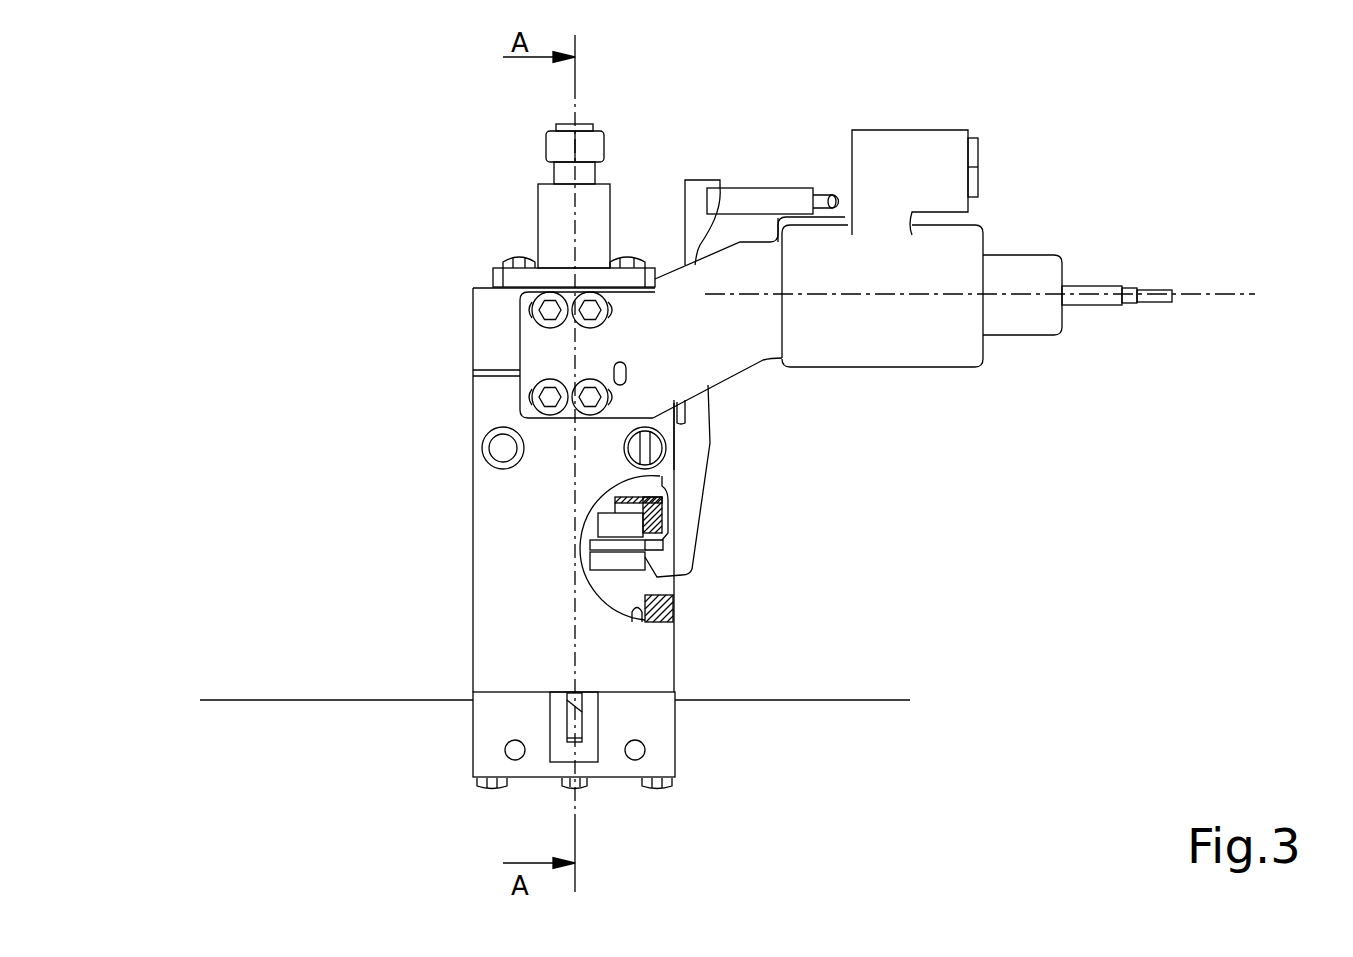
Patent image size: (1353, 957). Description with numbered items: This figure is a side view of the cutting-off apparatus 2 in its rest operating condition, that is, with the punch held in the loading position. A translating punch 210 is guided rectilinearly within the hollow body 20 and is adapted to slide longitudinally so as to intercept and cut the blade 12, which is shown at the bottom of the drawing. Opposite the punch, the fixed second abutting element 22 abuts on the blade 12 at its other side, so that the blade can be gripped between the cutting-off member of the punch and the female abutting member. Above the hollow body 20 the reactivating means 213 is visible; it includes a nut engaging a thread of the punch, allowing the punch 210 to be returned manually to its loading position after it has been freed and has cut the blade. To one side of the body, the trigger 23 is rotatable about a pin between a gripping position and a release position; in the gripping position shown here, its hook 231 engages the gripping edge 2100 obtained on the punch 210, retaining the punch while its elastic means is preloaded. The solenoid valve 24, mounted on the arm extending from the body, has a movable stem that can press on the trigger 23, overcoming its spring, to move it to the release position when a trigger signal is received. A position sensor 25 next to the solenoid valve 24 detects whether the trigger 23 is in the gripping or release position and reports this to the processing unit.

The cutting-off apparatus 2 is at (243, 203).
The blade 12 is at (840, 684).
The hollow body 20 is at (473, 616).
The second abutting element 22 is at (663, 747).
The trigger 23 is at (695, 467).
The solenoid valve 24 is at (1036, 165).
The position sensor 25 is at (744, 196).
The translating punch 210 is at (612, 505).
The reactivating means 213 is at (593, 142).
The hook 231 is at (663, 540).
The gripping edge 2100 is at (588, 568).